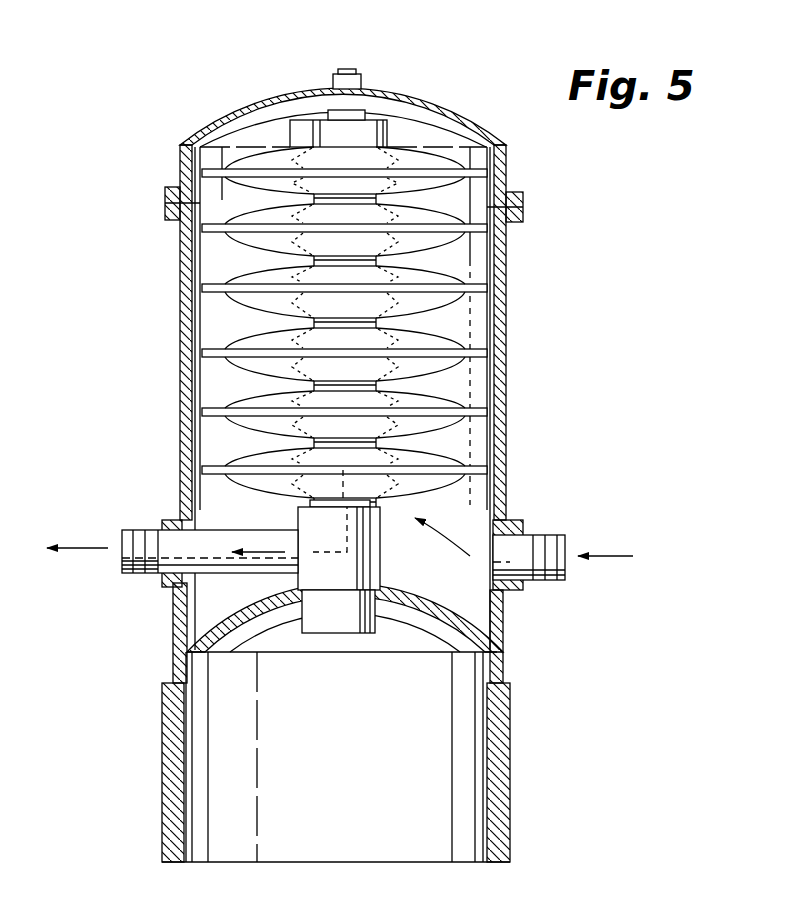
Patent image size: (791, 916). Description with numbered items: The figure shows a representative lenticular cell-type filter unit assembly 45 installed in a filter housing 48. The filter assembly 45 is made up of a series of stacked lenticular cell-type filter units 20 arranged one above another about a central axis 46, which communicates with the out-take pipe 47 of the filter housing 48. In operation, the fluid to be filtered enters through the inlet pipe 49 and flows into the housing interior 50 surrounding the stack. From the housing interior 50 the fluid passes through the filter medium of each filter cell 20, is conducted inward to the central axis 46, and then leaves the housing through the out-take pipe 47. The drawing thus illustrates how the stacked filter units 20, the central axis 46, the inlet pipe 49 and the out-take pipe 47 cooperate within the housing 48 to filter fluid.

The filter housing 48 is at (222, 92).
The lenticular cell-type filter unit assembly 45 is at (341, 322).
The lenticular cell-type filter unit 20 is at (447, 395).
The central axis 46 is at (345, 443).
The out-take pipe 47 is at (133, 530).
The inlet pipe 49 is at (555, 535).
The housing interior 50 is at (452, 570).